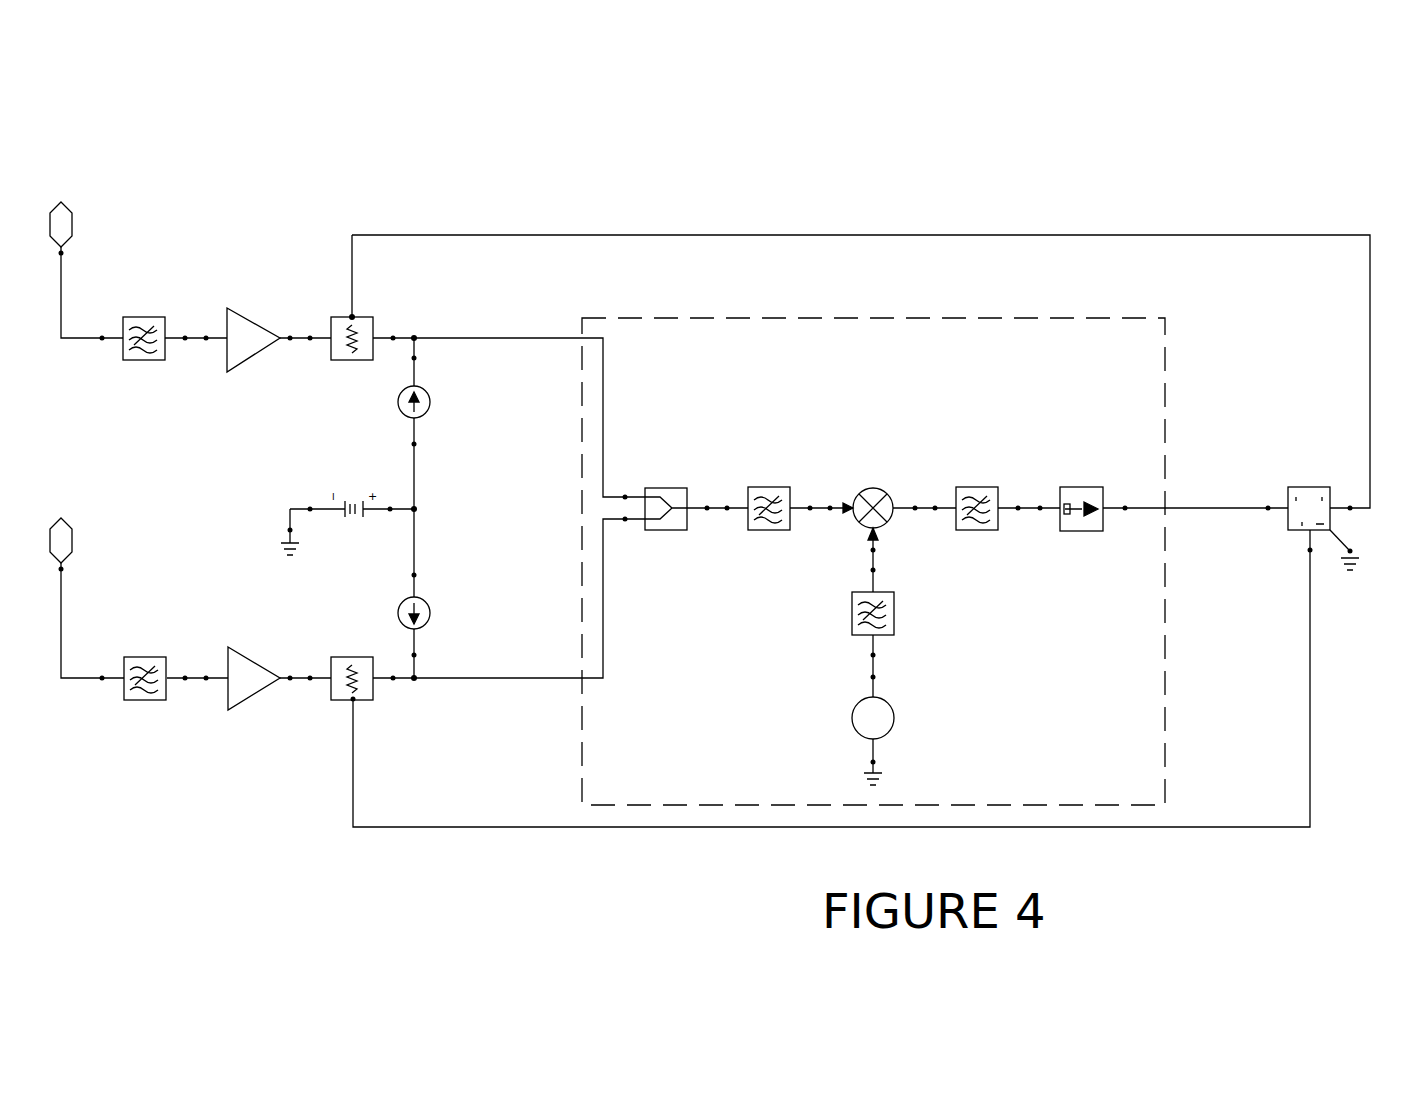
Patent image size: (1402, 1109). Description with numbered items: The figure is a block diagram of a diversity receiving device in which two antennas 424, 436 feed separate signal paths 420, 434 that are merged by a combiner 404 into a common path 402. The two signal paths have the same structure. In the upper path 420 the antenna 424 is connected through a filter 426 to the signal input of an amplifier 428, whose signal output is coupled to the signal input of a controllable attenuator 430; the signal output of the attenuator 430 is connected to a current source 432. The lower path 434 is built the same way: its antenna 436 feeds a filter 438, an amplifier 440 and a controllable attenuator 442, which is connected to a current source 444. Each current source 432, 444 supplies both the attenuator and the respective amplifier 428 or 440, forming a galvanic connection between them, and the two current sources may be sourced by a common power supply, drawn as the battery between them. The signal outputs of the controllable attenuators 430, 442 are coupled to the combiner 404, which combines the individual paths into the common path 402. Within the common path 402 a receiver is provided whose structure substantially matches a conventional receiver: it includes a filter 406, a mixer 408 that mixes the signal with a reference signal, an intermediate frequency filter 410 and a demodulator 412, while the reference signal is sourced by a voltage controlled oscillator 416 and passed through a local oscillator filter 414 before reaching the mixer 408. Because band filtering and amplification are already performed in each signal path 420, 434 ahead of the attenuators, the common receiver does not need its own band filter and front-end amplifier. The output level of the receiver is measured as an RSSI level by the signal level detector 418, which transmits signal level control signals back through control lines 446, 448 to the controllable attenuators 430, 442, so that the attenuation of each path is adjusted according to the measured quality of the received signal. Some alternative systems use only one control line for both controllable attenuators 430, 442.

The common path 402 is at (780, 399).
The combiner 404 is at (672, 518).
The filter 406 is at (766, 520).
The mixer 408 is at (873, 497).
The intermediate frequency filter 410 is at (975, 497).
The demodulator 412 is at (1070, 495).
The local oscillator filter 414 is at (887, 626).
The voltage controlled oscillator 416 is at (885, 730).
The signal level detector 418 is at (1305, 497).
The signal path 420 is at (243, 225).
The antenna 424 is at (62, 215).
The filter 426 is at (136, 327).
The amplifier 428 is at (243, 332).
The controllable attenuator 430 is at (363, 332).
The current source 432 is at (425, 402).
The signal path 434 is at (234, 792).
The antenna 436 is at (62, 538).
The filter 438 is at (135, 700).
The amplifier 440 is at (248, 677).
The controllable attenuator 442 is at (367, 690).
The current source 444 is at (422, 610).
The control line 446 is at (466, 840).
The upper feedback line 448 is at (472, 224).